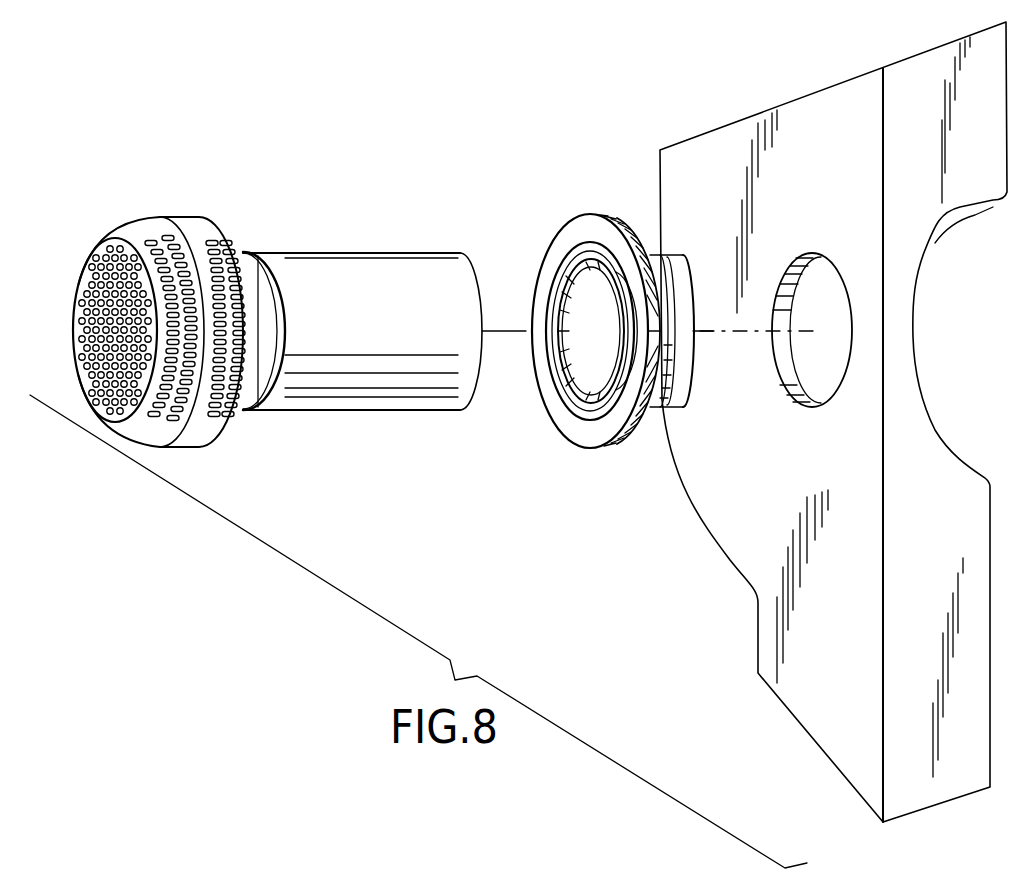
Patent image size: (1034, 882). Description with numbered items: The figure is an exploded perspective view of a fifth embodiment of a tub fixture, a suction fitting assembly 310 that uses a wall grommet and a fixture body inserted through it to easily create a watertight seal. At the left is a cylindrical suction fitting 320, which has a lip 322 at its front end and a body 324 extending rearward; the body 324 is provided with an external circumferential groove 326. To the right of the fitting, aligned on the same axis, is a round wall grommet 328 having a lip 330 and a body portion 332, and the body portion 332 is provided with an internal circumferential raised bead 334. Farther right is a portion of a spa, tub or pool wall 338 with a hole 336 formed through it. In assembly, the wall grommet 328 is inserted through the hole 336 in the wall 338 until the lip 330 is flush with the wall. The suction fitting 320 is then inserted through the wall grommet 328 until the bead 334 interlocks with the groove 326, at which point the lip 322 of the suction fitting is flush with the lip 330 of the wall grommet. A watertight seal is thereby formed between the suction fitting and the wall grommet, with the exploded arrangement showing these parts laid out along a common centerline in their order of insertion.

The suction fitting assembly 310 is at (463, 157).
The cylindrical suction fitting 320 is at (362, 287).
The lip 322 is at (220, 218).
The body 324 is at (353, 251).
The external circumferential groove 326 is at (248, 254).
The round wall grommet 328 is at (596, 297).
The lip 330 is at (613, 222).
The body portion 332 is at (668, 262).
The internal circumferential raised bead 334 is at (567, 300).
The hole 336 is at (811, 259).
The spa, tub or pool wall 338 is at (793, 98).